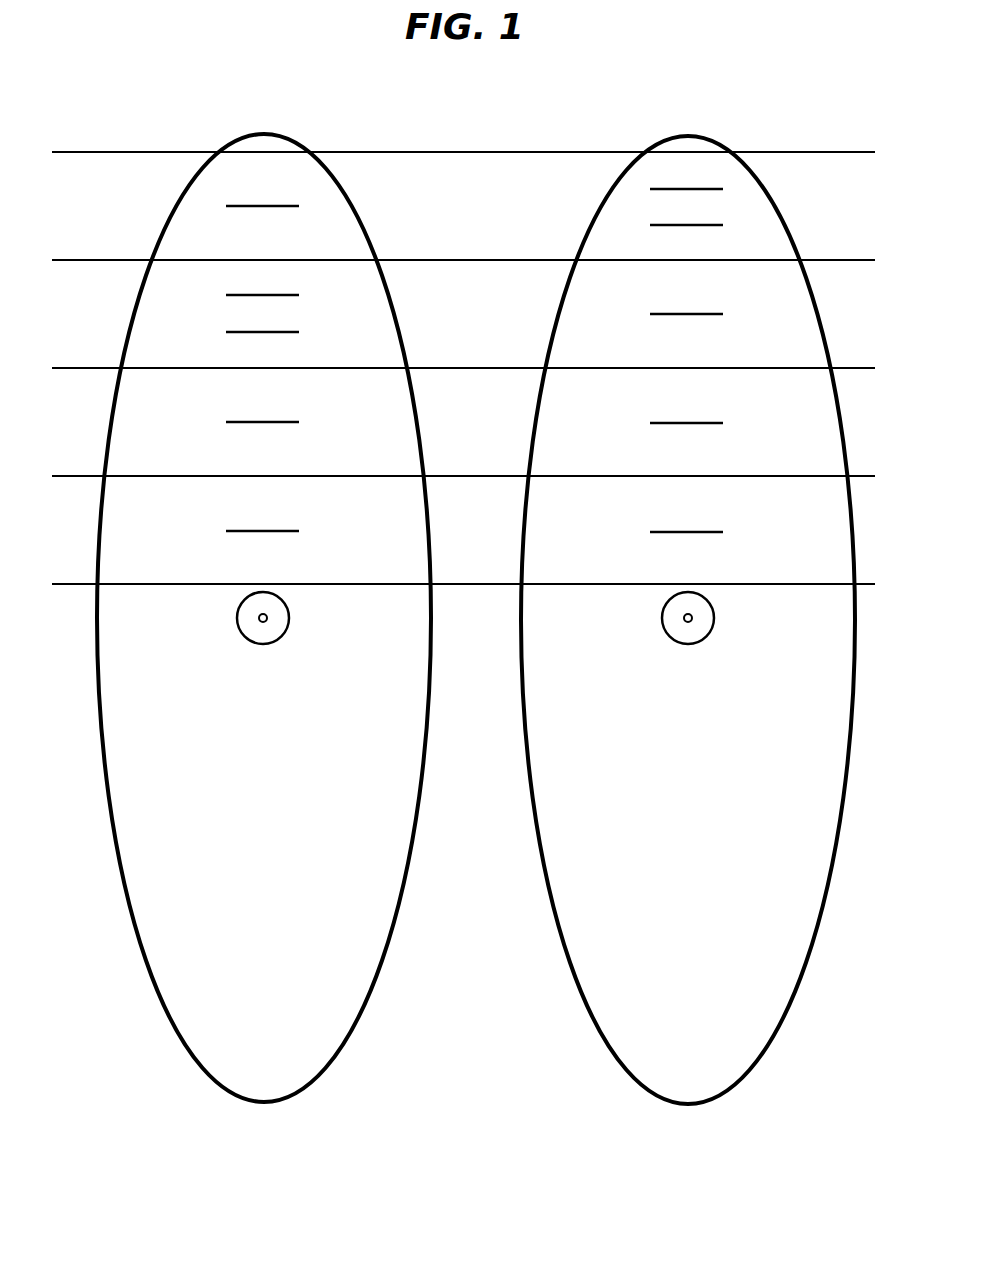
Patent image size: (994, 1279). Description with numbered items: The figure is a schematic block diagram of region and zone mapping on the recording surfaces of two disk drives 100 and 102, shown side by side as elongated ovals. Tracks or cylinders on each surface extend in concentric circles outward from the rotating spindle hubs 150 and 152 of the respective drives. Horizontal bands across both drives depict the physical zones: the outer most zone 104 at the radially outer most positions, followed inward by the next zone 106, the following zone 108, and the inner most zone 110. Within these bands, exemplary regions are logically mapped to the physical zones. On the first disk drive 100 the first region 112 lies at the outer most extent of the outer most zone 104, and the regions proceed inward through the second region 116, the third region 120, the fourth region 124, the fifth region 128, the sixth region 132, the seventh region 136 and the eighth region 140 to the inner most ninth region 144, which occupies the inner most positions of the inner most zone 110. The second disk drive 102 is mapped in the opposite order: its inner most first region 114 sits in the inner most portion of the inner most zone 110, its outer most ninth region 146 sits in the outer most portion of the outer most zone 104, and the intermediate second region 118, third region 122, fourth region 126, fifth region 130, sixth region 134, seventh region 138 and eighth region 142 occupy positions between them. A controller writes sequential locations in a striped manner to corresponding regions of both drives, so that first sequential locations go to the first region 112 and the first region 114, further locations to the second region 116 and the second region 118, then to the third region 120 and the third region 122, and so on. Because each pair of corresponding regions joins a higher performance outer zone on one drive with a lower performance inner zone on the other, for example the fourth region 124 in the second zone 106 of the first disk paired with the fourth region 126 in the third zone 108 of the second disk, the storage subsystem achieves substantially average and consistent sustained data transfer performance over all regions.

The disk drive 100 is at (327, 1063).
The disk drive 102 is at (615, 1057).
The zone 0 104 is at (146, 218).
The zone 1 106 is at (118, 327).
The zone 2 108 is at (94, 434).
The zone 3 110 is at (92, 536).
The region R0 112 is at (284, 178).
The region R1 116 is at (281, 237).
The region R2 120 is at (288, 281).
The region R3 124 is at (292, 316).
The region R4 128 is at (295, 352).
The region R5 132 is at (287, 390).
The region R6 136 is at (289, 444).
The region R7 140 is at (289, 500).
The region R8 144 is at (291, 555).
The region R8 146 is at (657, 167).
The region R7 142 is at (662, 202).
The region R6 138 is at (667, 240).
The region R5 134 is at (667, 285).
The region R4 130 is at (665, 338).
The region R3 126 is at (665, 395).
The region R2 122 is at (665, 448).
The region R1 118 is at (665, 503).
The region R0 114 is at (665, 556).
The spindle hub 150 is at (263, 645).
The spindle hub 152 is at (688, 645).